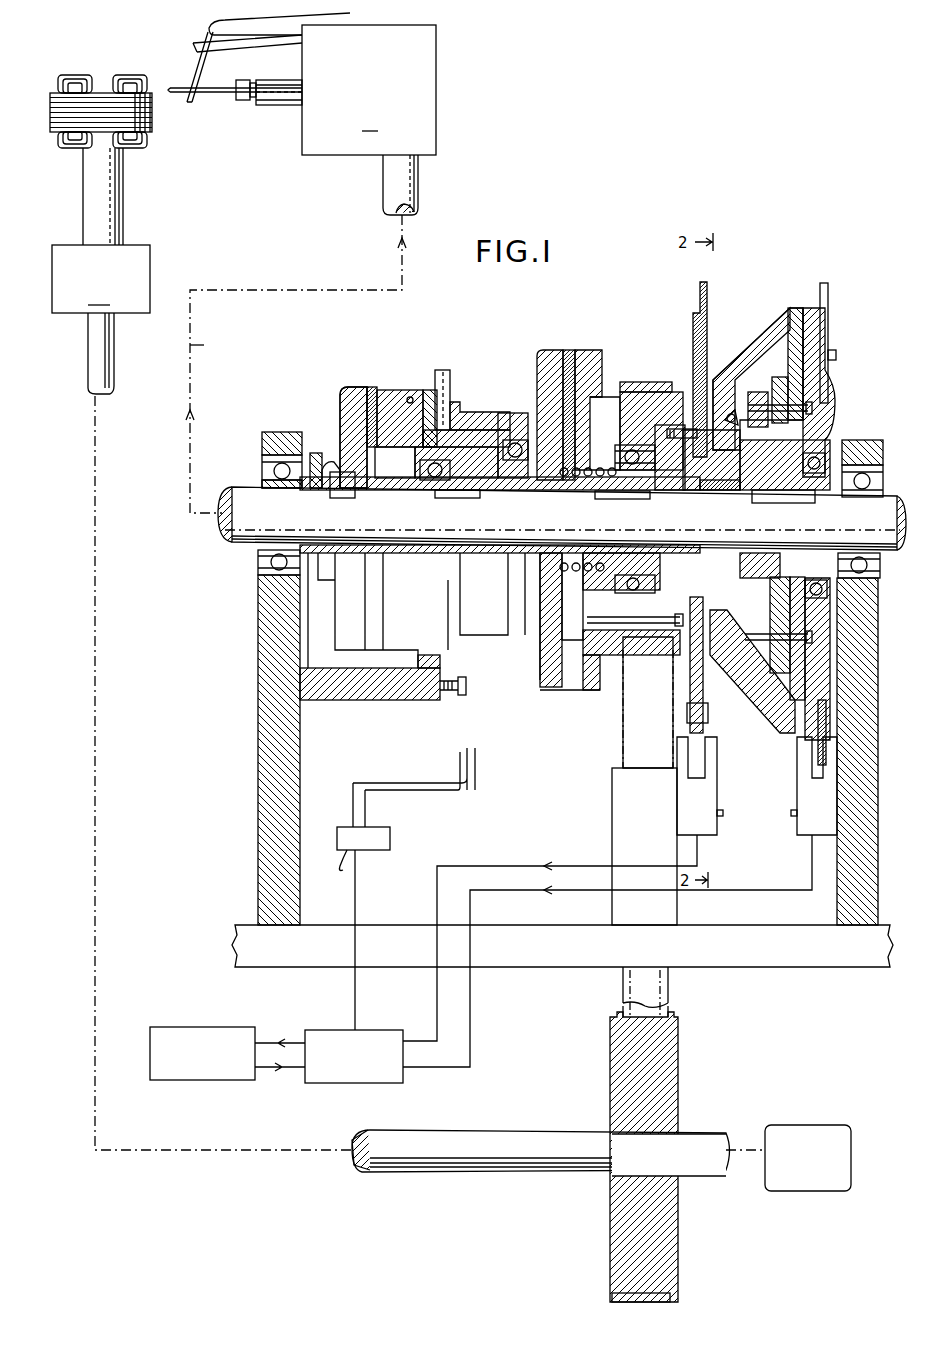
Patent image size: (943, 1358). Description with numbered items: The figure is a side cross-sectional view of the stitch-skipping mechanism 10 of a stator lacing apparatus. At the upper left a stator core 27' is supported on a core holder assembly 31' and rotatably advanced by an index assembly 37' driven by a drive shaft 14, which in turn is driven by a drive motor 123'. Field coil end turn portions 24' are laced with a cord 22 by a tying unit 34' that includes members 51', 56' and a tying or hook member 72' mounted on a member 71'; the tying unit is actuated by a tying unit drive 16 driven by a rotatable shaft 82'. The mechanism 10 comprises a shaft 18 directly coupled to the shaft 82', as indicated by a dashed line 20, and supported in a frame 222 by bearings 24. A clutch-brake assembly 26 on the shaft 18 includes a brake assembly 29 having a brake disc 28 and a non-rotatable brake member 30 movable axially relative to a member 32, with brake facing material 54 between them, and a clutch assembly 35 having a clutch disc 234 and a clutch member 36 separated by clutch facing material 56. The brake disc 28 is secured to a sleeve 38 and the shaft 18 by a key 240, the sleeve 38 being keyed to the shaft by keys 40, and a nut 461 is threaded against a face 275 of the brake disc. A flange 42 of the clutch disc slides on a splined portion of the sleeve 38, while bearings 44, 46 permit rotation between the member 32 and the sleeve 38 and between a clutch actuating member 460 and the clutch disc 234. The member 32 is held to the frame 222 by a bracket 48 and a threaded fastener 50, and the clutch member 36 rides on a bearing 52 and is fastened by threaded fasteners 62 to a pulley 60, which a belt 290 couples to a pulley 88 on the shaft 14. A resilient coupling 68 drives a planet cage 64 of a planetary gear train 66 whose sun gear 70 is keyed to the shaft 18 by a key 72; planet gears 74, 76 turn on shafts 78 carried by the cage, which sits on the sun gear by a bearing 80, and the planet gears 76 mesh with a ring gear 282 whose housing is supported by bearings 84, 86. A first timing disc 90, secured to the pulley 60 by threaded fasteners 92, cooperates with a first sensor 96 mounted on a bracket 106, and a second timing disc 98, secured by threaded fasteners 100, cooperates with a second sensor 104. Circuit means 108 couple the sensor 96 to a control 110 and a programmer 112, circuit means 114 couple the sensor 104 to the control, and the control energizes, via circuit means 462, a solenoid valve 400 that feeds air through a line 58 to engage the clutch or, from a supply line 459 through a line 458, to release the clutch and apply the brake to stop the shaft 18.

The stitch-skipping mechanism 10 is at (543, 800).
The drive shaft 14 is at (112, 372).
The tying unit drive 16 is at (369, 90).
The shaft 18 is at (240, 548).
The dashed line 20 is at (190, 362).
The cord 22 is at (262, 17).
The bearings 24 is at (558, 505).
The clutch-brake assembly 26 is at (450, 355).
The brake disc 28 is at (342, 392).
The brake assembly 29 is at (357, 368).
The brake member 30 is at (395, 398).
The brake member 32 is at (428, 388).
The tying unit 34' is at (227, 140).
The clutch assembly 35 is at (577, 297).
The clutch member 36 is at (592, 350).
The index assembly 37' is at (101, 279).
The sleeve 38 is at (428, 490).
The keys 40 is at (462, 498).
The flange 42 is at (550, 560).
The bearing 44 is at (395, 462).
The bearing 46 is at (578, 465).
The bracket 48 is at (356, 700).
The threaded fastener 50 is at (462, 696).
The member 51' is at (247, 53).
The bearing 52 is at (648, 475).
The brake facing material 54 is at (372, 390).
The clutch facing material 56 is at (573, 394).
The member 56' is at (227, 62).
The line 58 is at (447, 372).
The pulley 60 is at (620, 655).
The threaded fasteners 62 is at (650, 640).
The planet cage 64 is at (758, 392).
The planetary gear train 66 is at (770, 298).
The resilient coupling 68 is at (727, 492).
The sun gear 70 is at (810, 495).
The member 71' is at (235, 106).
The key 72 is at (783, 507).
The hook member 72' is at (202, 80).
The planet gears 74 is at (780, 385).
The planet gears 76 is at (818, 383).
The shaft 78 is at (812, 408).
The bearing 80 is at (760, 553).
The rotatable shaft 82' is at (429, 185).
The bearing 84 is at (725, 400).
The bearing 86 is at (822, 452).
The pulley 88 is at (679, 1090).
The first timing disc 90 is at (708, 295).
The threaded fasteners 92 is at (668, 429).
The first sensor 96 is at (702, 822).
The second timing disc 98 is at (829, 302).
The threaded fasteners 100 is at (788, 740).
The second sensor 104 is at (805, 822).
The bracket 106 is at (612, 810).
The circuit means 108 is at (452, 862).
The control 110 is at (342, 1083).
The programmer 112 is at (208, 1080).
The circuit means 114 is at (505, 892).
The drive motor 123' is at (808, 1158).
The frame 222 is at (258, 753).
The clutch disc 234 is at (548, 350).
The key 240 is at (348, 498).
The face 275 is at (334, 462).
The ring gear 282 is at (795, 308).
The belt 290 is at (637, 382).
The solenoid valve 400 is at (377, 850).
The line 458 is at (432, 806).
The supply line 459 is at (329, 874).
The clutch actuating member 460 is at (515, 425).
The nut 461 is at (315, 452).
The circuit means 462 is at (357, 913).
The field coil end turn portions 24' is at (102, 87).
The stator core 27' is at (83, 112).
The core holder assembly 31' is at (129, 196).